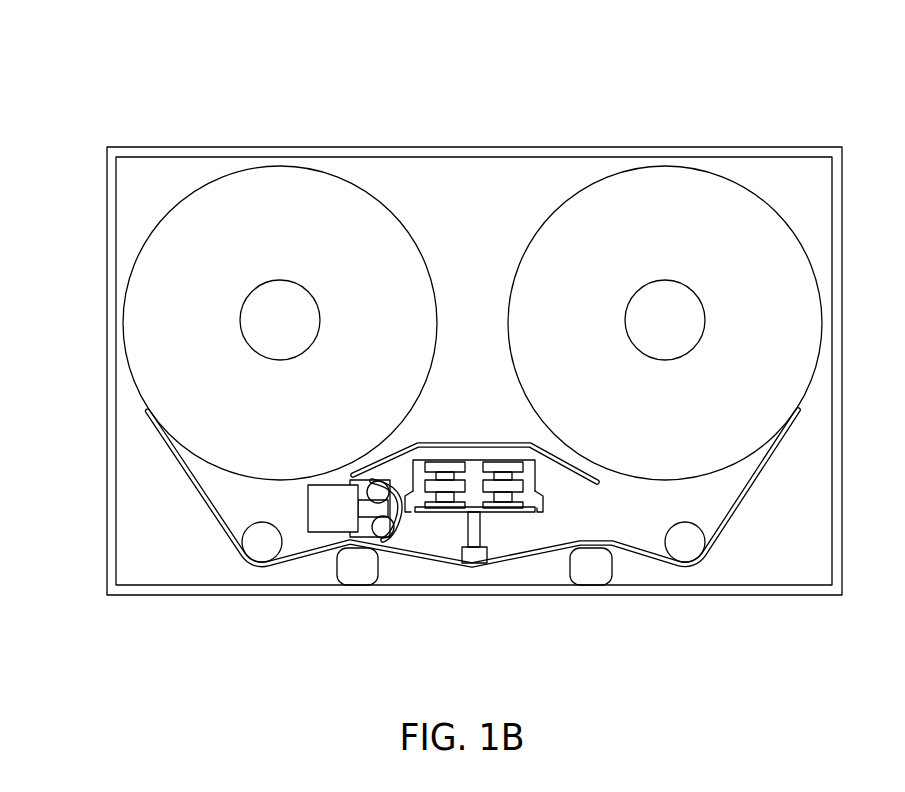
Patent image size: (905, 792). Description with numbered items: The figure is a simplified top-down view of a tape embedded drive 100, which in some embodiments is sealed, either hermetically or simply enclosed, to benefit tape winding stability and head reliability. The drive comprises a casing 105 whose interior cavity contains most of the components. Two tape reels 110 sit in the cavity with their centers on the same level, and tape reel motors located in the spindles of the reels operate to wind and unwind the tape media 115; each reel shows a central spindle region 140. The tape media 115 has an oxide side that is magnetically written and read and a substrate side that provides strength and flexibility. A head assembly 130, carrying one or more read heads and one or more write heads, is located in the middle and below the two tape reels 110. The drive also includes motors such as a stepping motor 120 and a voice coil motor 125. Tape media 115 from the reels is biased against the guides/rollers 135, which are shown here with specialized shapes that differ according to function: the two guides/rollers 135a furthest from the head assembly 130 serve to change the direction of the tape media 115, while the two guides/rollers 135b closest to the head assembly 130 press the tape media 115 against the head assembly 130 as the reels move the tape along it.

The tape embedded drive 100 is at (101, 72).
The casing 105 is at (505, 147).
The tape reels 110 is at (263, 167).
The tape media 115 is at (207, 505).
The stepping motor 120 is at (318, 532).
The voice coil motor 125 is at (445, 512).
The head assembly 130 is at (473, 563).
The guides/rollers 135 is at (262, 543).
The guides/rollers 135a is at (690, 548).
The guides/rollers 135b is at (357, 572).
The reel hub 140 is at (312, 290).